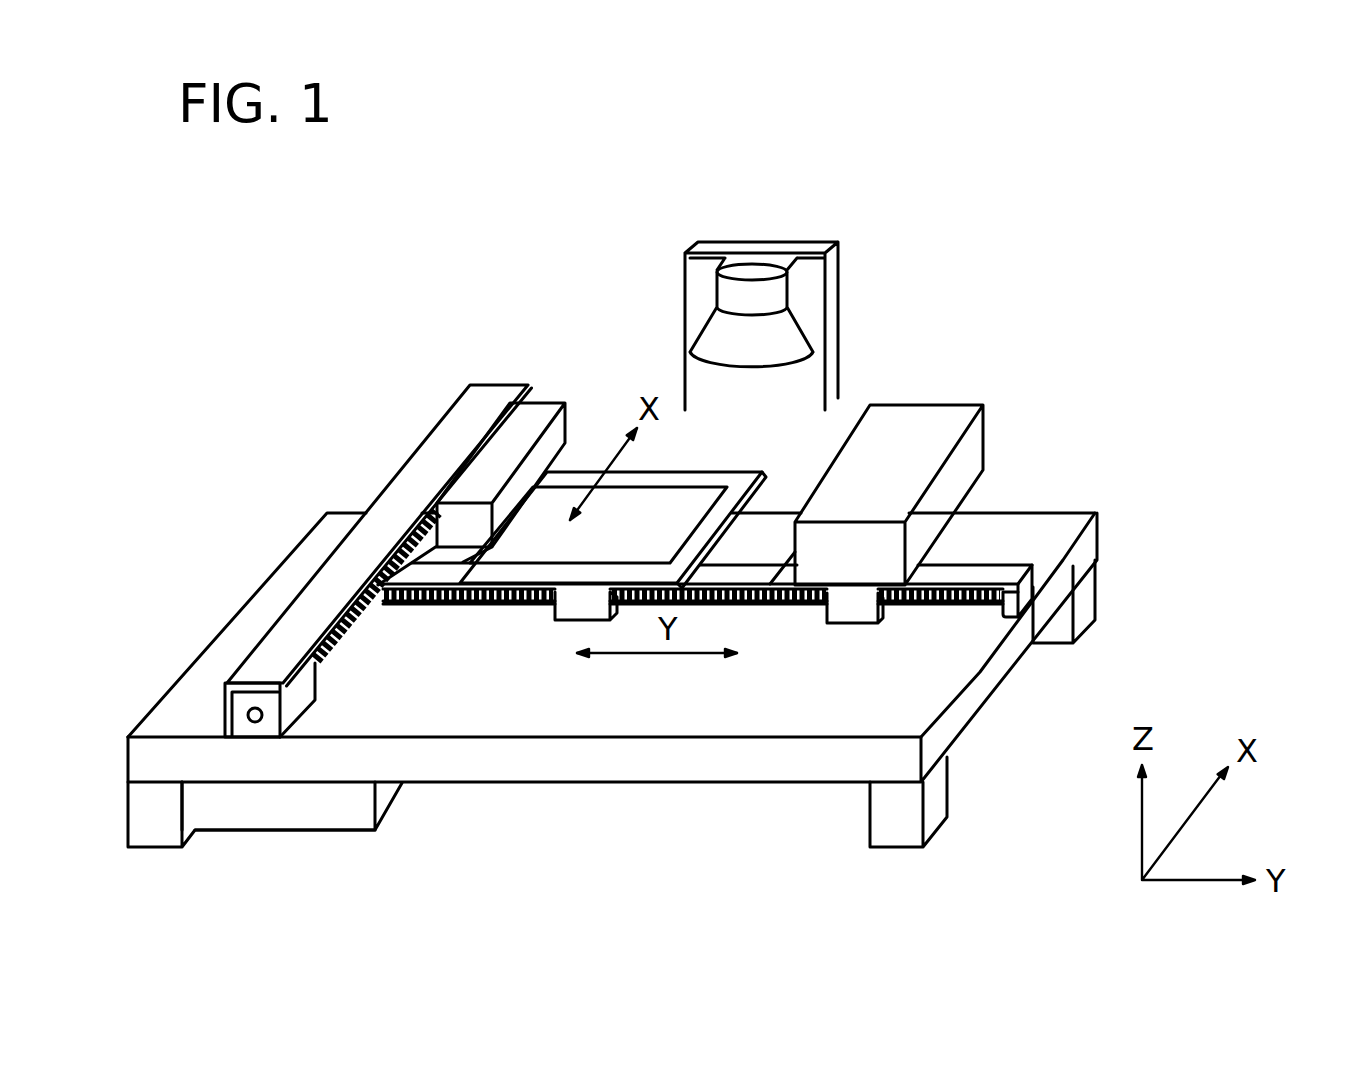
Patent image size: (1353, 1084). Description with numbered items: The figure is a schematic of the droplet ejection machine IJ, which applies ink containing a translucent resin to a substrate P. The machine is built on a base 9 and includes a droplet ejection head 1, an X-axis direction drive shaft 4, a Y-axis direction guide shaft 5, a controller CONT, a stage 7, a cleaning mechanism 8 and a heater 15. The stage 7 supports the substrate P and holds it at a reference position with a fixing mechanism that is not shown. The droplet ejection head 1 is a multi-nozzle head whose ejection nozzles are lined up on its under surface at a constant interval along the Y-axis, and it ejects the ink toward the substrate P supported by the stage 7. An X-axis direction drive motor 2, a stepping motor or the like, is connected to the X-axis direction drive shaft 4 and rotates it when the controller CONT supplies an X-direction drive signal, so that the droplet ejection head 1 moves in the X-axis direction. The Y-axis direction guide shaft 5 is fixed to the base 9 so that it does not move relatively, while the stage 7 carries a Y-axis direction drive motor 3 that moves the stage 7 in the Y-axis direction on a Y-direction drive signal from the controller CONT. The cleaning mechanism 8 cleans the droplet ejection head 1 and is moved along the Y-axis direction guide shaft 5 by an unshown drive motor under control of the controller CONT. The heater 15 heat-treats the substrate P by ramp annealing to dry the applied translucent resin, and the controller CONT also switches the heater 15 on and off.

The droplet ejection machine IJ is at (557, 208).
The droplet ejection head 1 is at (547, 397).
The X-axis direction drive motor 2 is at (225, 713).
The Y-axis direction drive motor 3 is at (555, 611).
The X-axis direction drive shaft 4 is at (350, 630).
The Y-axis direction guide shaft 5 is at (963, 603).
The stage 7 is at (730, 473).
The cleaning mechanism 8 is at (930, 405).
The base 9 is at (1050, 513).
The heater 15 is at (723, 293).
The substrate P is at (673, 473).
The controller CONT is at (390, 803).